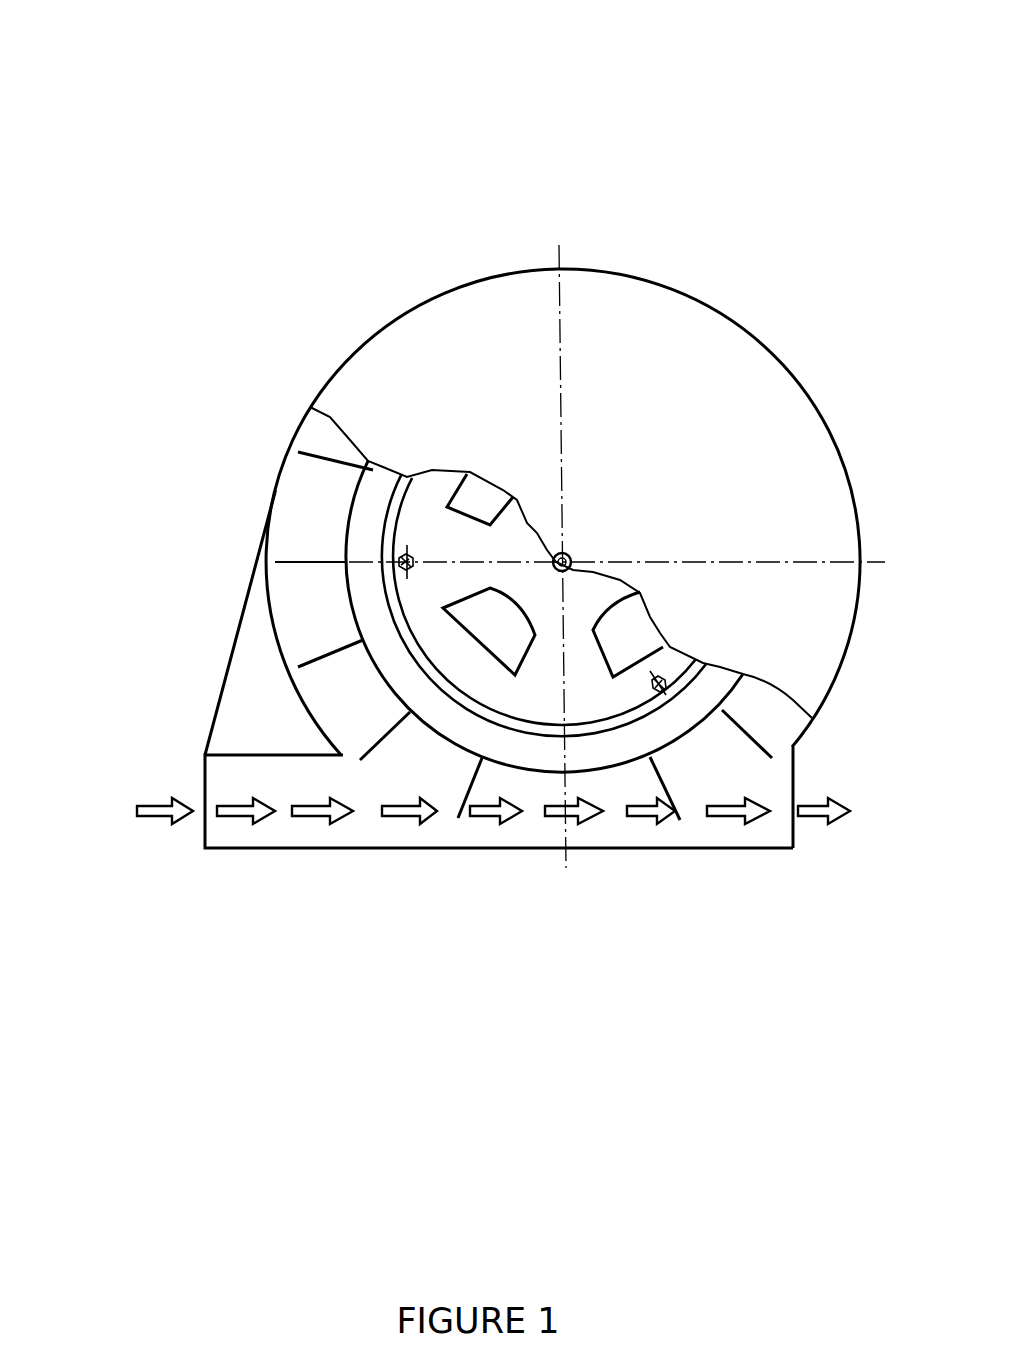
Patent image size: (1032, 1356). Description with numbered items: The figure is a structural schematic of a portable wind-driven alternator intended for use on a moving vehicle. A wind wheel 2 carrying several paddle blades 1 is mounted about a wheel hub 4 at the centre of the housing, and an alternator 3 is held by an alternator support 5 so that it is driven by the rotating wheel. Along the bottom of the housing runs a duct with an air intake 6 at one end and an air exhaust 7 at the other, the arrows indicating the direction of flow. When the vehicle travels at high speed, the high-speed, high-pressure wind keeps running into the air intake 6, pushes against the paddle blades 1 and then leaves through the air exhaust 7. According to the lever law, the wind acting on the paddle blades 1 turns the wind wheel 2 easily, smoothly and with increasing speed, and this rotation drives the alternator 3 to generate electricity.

The paddle blade 1 is at (300, 560).
The wind wheel 2 is at (370, 583).
The alternator 3 is at (513, 543).
The wheel hub 4 is at (526, 380).
The alternator support 5 is at (398, 556).
The air intake 6 is at (203, 819).
The air exhaust 7 is at (791, 824).